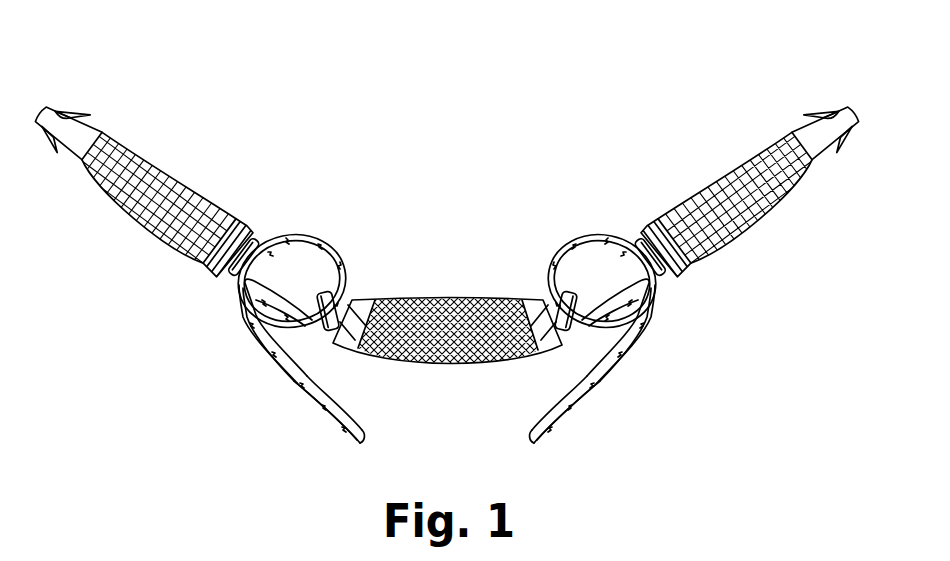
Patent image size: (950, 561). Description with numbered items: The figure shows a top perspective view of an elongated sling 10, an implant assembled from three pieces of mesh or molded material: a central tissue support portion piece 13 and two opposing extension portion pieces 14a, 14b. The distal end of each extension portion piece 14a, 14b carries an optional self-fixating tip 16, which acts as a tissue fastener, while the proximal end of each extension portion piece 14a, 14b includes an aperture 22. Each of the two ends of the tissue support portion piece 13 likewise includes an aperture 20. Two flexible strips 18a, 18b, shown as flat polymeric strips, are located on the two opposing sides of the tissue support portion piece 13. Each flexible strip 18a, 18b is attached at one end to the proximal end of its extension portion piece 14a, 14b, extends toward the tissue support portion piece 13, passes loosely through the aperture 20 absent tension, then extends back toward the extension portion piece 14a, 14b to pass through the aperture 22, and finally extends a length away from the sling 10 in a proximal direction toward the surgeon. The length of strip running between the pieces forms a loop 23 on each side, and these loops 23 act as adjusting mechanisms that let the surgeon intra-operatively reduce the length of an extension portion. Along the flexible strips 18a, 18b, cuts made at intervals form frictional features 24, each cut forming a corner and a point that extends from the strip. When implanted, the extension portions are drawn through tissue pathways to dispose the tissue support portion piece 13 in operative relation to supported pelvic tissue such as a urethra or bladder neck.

The elongated sling 10 is at (437, 81).
The tissue support portion piece 13 is at (433, 300).
The extension portion piece 14a is at (722, 168).
The extension portion piece 14b is at (175, 168).
The self-fixating tip 16 is at (76, 103).
The flexible strip 18a is at (553, 413).
The flexible strip 18b is at (337, 413).
The aperture 20 is at (352, 295).
The aperture 22 is at (250, 240).
The loop 23 is at (362, 226).
The frictional features 24 is at (446, 318).